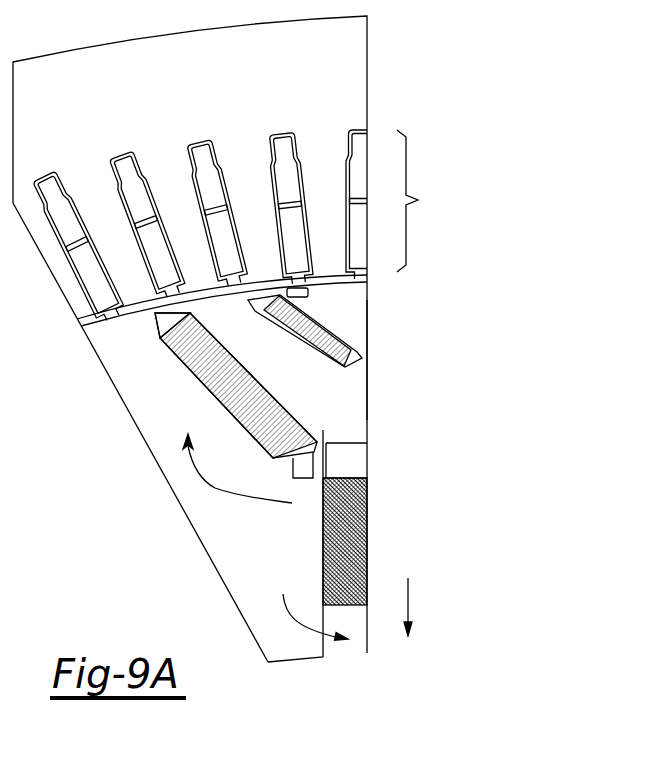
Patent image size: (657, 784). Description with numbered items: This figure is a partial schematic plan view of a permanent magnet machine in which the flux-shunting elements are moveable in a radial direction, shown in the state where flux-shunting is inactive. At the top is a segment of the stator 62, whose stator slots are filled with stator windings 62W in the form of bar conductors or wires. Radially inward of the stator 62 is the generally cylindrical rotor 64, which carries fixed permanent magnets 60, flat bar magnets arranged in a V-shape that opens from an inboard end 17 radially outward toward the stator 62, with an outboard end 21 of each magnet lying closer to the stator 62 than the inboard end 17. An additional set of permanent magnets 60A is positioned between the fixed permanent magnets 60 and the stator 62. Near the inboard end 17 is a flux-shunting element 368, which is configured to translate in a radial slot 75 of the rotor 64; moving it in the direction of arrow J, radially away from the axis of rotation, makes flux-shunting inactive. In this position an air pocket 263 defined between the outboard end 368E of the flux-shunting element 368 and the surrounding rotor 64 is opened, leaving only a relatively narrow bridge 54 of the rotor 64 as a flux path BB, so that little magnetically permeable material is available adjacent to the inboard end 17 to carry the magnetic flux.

The stator 62 is at (320, 63).
The stator windings 62W is at (435, 201).
The rotor 64 is at (354, 384).
The outboard end 21 is at (165, 328).
The permanent magnets 60 is at (210, 367).
The additional permanent magnets 60A is at (307, 333).
The inboard end 17 is at (304, 460).
The bridge 54 is at (323, 437).
The air pocket 263 is at (362, 458).
The flux-shunting element 368 is at (360, 540).
The outboard end 368E is at (360, 478).
The radial slot 75 is at (310, 606).
The flux path BB is at (220, 492).
The arrow J is at (413, 607).